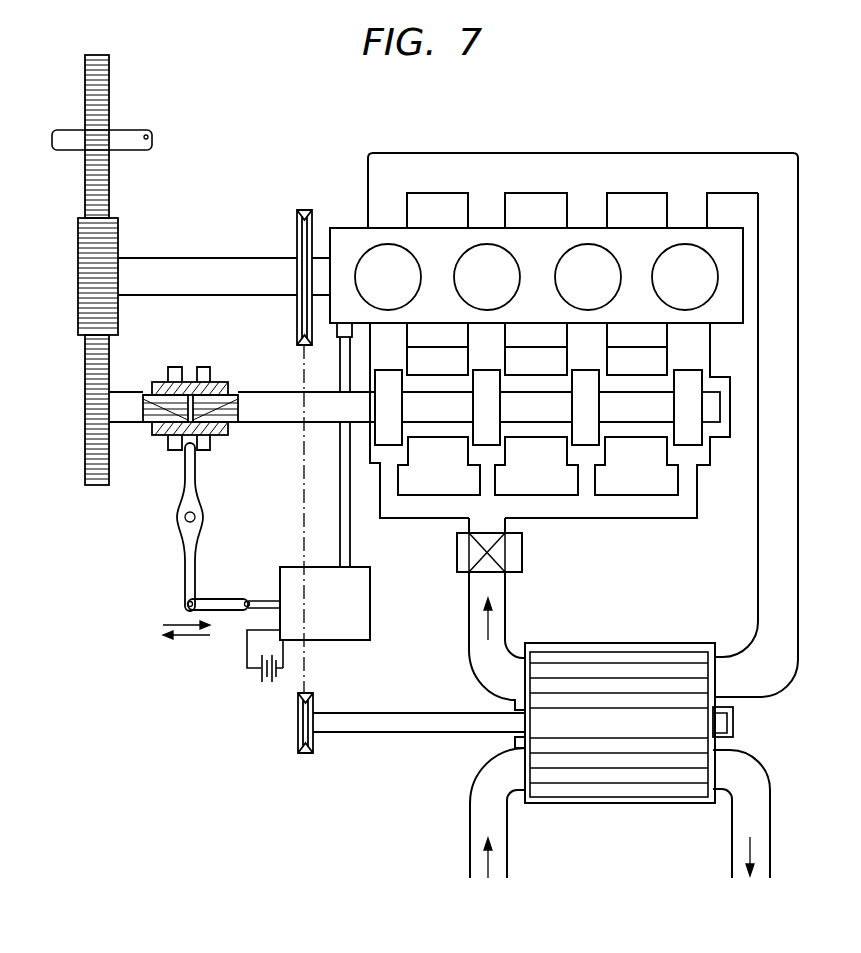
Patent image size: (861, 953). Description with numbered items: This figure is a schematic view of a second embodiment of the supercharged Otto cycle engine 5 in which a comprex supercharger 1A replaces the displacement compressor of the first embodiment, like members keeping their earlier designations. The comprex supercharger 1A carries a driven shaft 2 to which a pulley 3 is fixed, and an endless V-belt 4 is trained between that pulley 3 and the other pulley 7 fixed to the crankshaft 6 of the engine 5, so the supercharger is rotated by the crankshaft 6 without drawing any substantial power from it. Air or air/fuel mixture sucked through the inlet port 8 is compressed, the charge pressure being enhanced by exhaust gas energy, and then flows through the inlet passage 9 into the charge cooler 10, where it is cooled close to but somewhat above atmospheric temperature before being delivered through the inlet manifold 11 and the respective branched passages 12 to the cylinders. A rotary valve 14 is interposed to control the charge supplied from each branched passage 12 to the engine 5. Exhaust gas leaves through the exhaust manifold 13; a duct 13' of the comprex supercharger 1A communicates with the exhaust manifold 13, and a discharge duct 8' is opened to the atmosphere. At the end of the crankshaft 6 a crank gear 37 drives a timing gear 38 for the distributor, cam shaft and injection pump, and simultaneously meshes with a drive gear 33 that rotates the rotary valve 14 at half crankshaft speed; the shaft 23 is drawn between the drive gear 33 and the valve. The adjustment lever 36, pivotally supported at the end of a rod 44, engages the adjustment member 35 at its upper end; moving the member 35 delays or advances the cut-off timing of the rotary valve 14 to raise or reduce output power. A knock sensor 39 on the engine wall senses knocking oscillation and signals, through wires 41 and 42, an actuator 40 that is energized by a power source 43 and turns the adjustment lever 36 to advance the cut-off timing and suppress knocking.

The comprex supercharger 1A is at (628, 648).
The driven shaft 2 is at (419, 718).
The pulley 3 is at (298, 720).
The endless V-belt 4 is at (300, 474).
The engine 5 is at (538, 246).
The crankshaft 6 is at (209, 277).
The pulley 7 is at (297, 236).
The inlet port 8 is at (472, 807).
The discharge duct 8' is at (765, 814).
The inlet passage 9 is at (497, 598).
The charge cooler 10 is at (522, 548).
The inlet manifold 11 is at (636, 505).
The branched passage 12 is at (470, 483).
The exhaust manifold 13 is at (583, 405).
The duct 13' is at (729, 578).
The rotary valve 14 is at (390, 382).
The shaft 23 is at (266, 392).
The drive gear 33 is at (92, 407).
The adjustment member 35 is at (212, 382).
The adjustment lever 36 is at (184, 497).
The crank gear 37 is at (78, 279).
The timing gear 38 is at (85, 84).
The knock sensor 39 is at (339, 336).
The actuator 40 is at (345, 601).
The wire 41 is at (340, 455).
The wire 42 is at (353, 505).
The power source 43 is at (264, 682).
The rod 44 is at (264, 600).